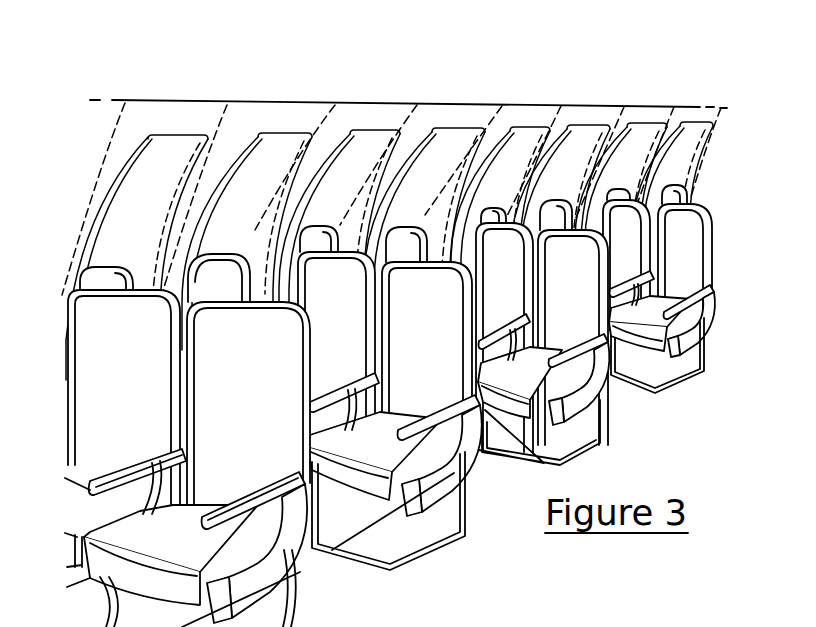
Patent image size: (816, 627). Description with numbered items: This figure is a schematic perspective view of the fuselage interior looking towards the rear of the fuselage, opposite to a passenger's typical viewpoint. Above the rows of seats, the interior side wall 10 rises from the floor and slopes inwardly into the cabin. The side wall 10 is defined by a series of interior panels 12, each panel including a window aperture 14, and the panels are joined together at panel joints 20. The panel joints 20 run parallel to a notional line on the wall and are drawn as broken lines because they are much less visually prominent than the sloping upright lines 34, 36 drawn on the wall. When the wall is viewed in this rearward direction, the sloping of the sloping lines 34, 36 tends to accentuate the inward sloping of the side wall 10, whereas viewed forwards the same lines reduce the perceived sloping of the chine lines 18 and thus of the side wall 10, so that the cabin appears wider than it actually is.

The interior side wall 10 is at (438, 115).
The interior panel 12 is at (133, 200).
The window aperture 14 is at (667, 193).
The chine line 18 is at (185, 184).
The panel joint 20 is at (505, 107).
The sloping line 34 is at (222, 170).
The sloping line 36 is at (297, 165).